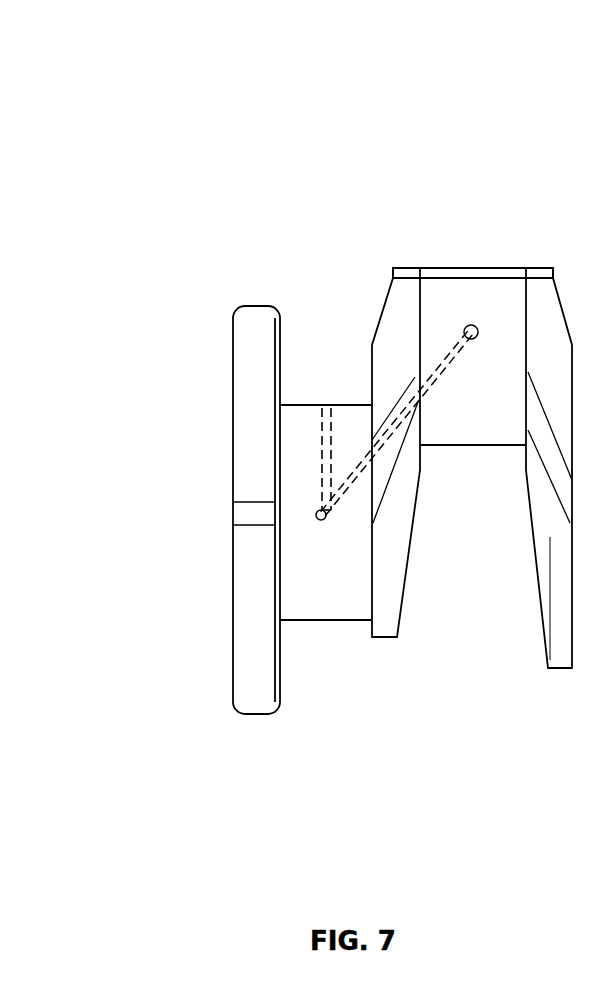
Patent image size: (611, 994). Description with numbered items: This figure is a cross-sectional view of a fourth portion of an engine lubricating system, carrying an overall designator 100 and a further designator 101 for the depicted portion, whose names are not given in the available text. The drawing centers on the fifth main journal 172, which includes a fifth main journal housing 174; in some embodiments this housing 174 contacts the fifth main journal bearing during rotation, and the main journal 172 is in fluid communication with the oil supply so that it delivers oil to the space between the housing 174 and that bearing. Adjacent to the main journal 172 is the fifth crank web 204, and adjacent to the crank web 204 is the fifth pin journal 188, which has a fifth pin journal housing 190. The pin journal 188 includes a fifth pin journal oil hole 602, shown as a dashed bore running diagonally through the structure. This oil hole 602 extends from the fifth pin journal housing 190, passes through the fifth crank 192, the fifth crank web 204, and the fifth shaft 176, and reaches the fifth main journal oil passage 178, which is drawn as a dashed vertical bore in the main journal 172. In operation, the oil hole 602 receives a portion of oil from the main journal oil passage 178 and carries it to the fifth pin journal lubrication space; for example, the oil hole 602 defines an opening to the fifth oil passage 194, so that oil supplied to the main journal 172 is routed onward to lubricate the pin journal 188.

The system 100 is at (90, 98).
The spring loaded clamp assembly 101 is at (180, 297).
The fifth main journal 172 is at (303, 643).
The fifth main journal housing 174 is at (298, 407).
The fifth shaft 176 is at (341, 593).
The fifth main journal oil passage 178 is at (321, 405).
The fifth pin journal 188 is at (450, 508).
The fifth pin journal housing 190 is at (448, 277).
The fifth crank 192 is at (497, 277).
The fifth oil passage 194 is at (435, 365).
The fifth crank web 204 is at (388, 640).
The fifth pin journal oil hole 602 is at (478, 338).